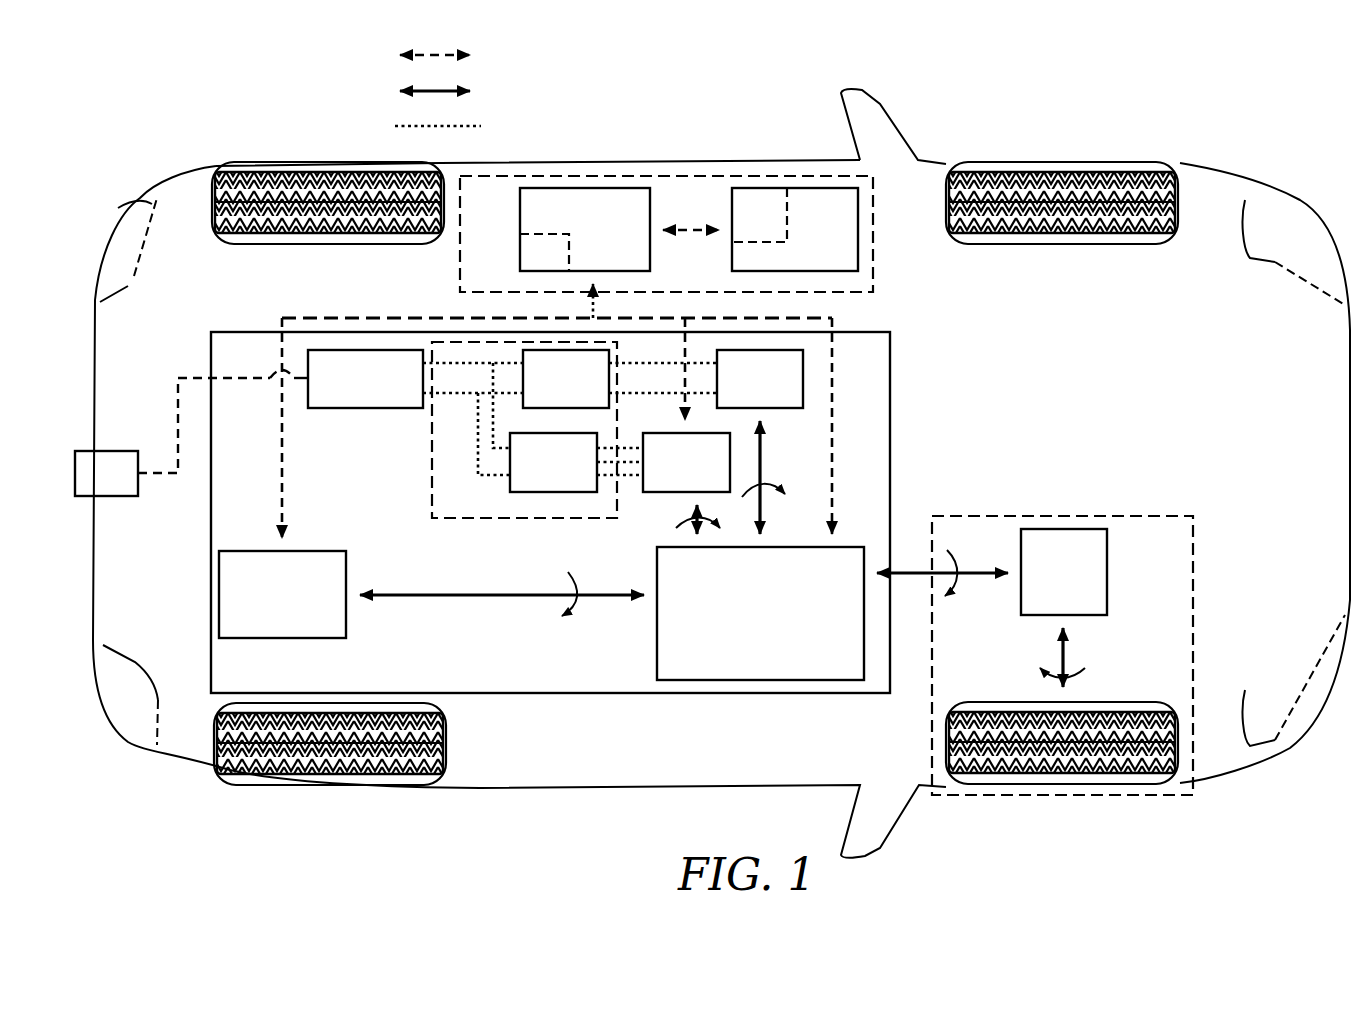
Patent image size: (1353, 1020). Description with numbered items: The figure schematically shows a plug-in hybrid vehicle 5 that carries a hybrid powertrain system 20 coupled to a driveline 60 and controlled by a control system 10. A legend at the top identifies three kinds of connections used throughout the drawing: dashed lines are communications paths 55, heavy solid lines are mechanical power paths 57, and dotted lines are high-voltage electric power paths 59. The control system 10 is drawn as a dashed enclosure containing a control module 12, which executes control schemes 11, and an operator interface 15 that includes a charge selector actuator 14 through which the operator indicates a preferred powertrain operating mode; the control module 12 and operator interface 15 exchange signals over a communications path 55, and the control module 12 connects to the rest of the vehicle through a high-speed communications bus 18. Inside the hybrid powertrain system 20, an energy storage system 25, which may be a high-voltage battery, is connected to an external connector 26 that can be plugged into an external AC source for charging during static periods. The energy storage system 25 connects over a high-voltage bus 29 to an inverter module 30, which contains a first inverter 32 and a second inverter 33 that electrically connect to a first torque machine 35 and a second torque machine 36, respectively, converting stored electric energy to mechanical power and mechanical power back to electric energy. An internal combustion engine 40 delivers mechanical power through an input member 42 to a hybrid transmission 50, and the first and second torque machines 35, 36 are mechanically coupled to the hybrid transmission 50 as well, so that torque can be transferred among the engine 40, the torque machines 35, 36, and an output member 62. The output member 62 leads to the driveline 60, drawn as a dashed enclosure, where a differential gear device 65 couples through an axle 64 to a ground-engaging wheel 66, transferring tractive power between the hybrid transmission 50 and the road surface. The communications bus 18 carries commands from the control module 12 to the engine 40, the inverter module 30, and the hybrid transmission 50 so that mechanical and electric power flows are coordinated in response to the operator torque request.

The plug-in hybrid vehicle 5 is at (1152, 296).
The control system 10 is at (499, 212).
The control schemes 11 is at (556, 267).
The control module 12 is at (616, 238).
The charge selector actuator 14 is at (772, 231).
The operator interface 15 is at (833, 255).
The high-speed communications bus 18 is at (822, 314).
The hybrid powertrain system 20 is at (897, 426).
The energy storage system 25 is at (379, 392).
The external connector 26 is at (119, 485).
The high-voltage bus 29 is at (470, 428).
The inverter module 30 is at (524, 519).
The first inverter 32 is at (567, 475).
The second inverter 33 is at (579, 392).
The first torque machine 35 is at (700, 475).
The second torque machine 36 is at (773, 392).
The internal combustion engine 40 is at (296, 605).
The input member 42 is at (413, 597).
The hybrid transmission 50 is at (774, 624).
The communications paths 55 is at (517, 67).
The mechanical power paths 57 is at (517, 103).
The high-voltage electric power paths 59 is at (517, 138).
The driveline 60 is at (1062, 512).
The output member 62 is at (905, 570).
The axle 64 is at (1073, 658).
The differential gear device 65 is at (1077, 587).
The ground-engaging wheel 66 is at (1122, 698).